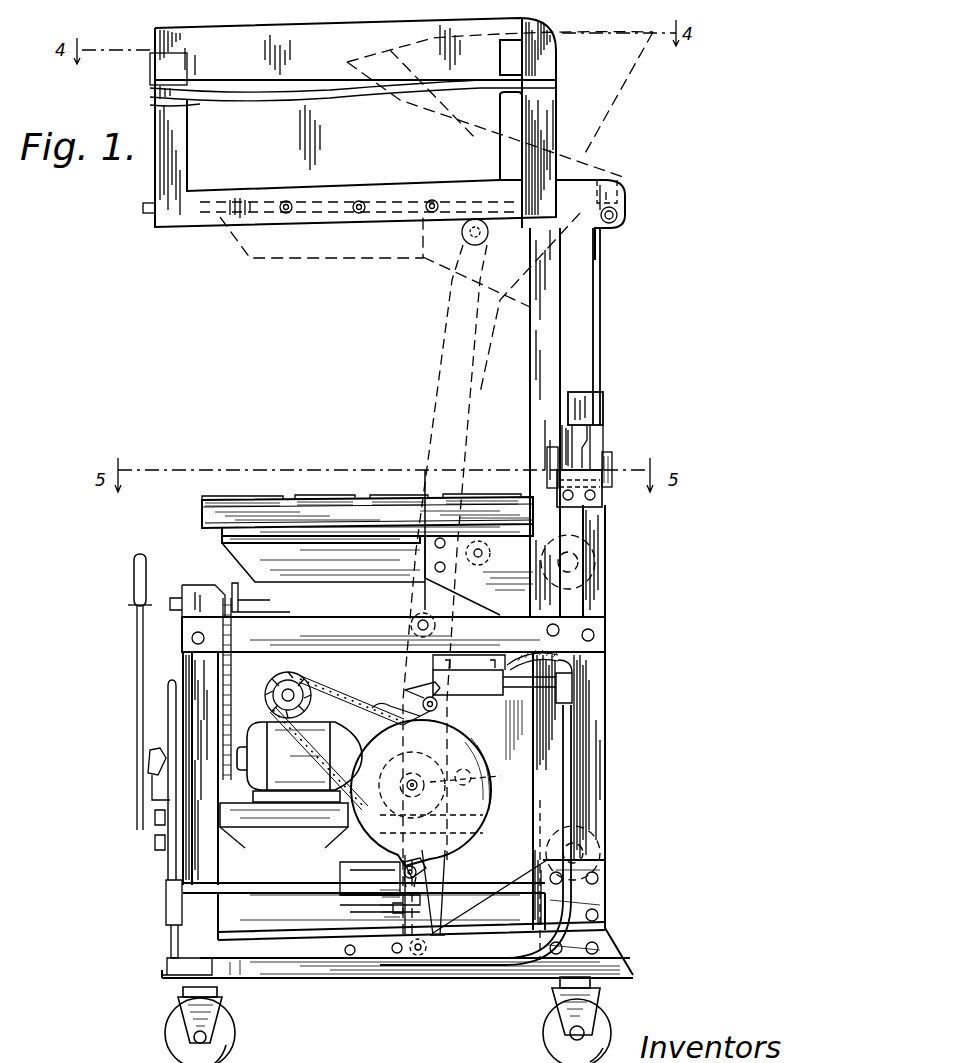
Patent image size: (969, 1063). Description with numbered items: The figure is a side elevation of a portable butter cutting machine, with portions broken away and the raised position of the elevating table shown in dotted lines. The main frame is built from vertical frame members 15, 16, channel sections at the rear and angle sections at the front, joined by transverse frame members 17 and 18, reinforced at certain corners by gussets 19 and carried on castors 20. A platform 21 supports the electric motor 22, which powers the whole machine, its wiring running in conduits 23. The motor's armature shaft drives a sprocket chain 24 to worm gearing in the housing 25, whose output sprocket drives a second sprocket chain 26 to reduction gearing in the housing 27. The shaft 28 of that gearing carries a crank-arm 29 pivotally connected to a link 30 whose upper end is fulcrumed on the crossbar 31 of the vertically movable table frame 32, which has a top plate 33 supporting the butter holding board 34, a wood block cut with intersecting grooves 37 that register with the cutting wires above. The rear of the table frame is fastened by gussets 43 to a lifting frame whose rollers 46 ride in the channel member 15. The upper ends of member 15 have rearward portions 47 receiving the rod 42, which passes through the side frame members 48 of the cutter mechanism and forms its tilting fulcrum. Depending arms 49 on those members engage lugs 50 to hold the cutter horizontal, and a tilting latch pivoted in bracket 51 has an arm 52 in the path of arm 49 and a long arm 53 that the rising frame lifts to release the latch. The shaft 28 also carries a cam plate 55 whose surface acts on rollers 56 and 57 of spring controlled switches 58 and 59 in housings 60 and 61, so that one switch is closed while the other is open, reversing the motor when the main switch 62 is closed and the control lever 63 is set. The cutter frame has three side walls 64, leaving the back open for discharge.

The vertical frame member 15 is at (607, 715).
The vertical frame member 16 is at (200, 862).
The transverse frame member 17 is at (285, 922).
The transverse frame member 18 is at (348, 628).
The gusset 19 is at (505, 908).
The castor 20 is at (166, 1038).
The platform 21 is at (318, 832).
The electric motor 22 is at (332, 735).
The conduit 23 is at (168, 726).
The sprocket chain 24 is at (238, 716).
The worm gearing housing 25 is at (268, 698).
The sprocket chain 26 is at (350, 690).
The reduction gearing housing 27 is at (370, 869).
The shaft 28 is at (480, 765).
The crank-arm 29 is at (436, 902).
The link 30 is at (448, 318).
The crossbar 31 is at (462, 258).
The table frame 32 is at (352, 264).
The top plate 33 is at (204, 520).
The butter holding board 34 is at (265, 500).
The grooves 37 is at (370, 491).
The rod 42 is at (620, 222).
The gusset 43 is at (440, 590).
The roller 46 is at (598, 592).
The rearward extending portion 47 is at (618, 184).
The side frame member 48 is at (196, 223).
The depending arm 49 is at (601, 320).
The lug 50 is at (604, 392).
The bracket 51 is at (602, 500).
The arm 52 is at (546, 452).
The arm 53 is at (612, 462).
The cam plate 55 is at (472, 748).
The roller 56 is at (422, 704).
The roller 57 is at (430, 876).
The spring controlled switch 58 is at (420, 692).
The spring controlled switch 59 is at (404, 874).
The housing 60 is at (478, 692).
The housing 61 is at (378, 880).
The main current control switch 62 is at (150, 764).
The main switch control lever 63 is at (138, 612).
The side wall 64 is at (150, 92).